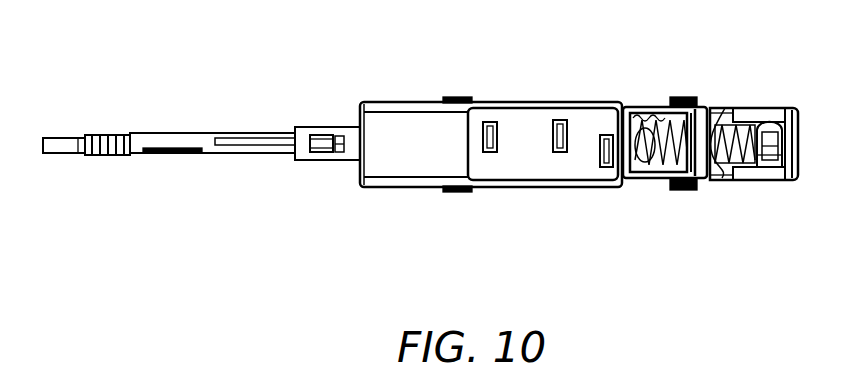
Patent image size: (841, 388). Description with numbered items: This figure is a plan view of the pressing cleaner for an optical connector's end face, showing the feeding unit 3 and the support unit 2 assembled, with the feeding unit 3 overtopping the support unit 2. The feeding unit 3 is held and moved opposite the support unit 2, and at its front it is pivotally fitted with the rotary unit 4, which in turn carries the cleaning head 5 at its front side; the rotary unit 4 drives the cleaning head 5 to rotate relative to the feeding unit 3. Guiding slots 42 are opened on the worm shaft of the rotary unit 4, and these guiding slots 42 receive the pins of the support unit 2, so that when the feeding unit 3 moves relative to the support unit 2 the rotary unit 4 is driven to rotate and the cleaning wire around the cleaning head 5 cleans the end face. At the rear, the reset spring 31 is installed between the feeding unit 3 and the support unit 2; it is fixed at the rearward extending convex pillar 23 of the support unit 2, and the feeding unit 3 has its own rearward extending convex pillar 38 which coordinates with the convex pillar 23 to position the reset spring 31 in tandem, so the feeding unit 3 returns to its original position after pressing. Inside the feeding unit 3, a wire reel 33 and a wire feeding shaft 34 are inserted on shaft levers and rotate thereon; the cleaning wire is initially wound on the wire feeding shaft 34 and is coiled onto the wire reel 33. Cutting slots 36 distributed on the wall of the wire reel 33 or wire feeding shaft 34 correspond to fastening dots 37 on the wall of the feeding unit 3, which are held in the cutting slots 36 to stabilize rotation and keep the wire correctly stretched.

The support unit 2 is at (727, 99).
The feeding unit 3 is at (403, 123).
The rotary unit 4 is at (197, 133).
The cleaning head 5 is at (71, 136).
The convex pillar 23 is at (755, 99).
The reset spring 31 is at (725, 181).
The wire reel 33 is at (558, 120).
The wire feeding shaft 34 is at (482, 152).
The cutting slots 36 is at (573, 155).
The fastening dots 37 is at (552, 130).
The convex pillar 38 is at (632, 102).
The guiding slots 42 is at (600, 147).